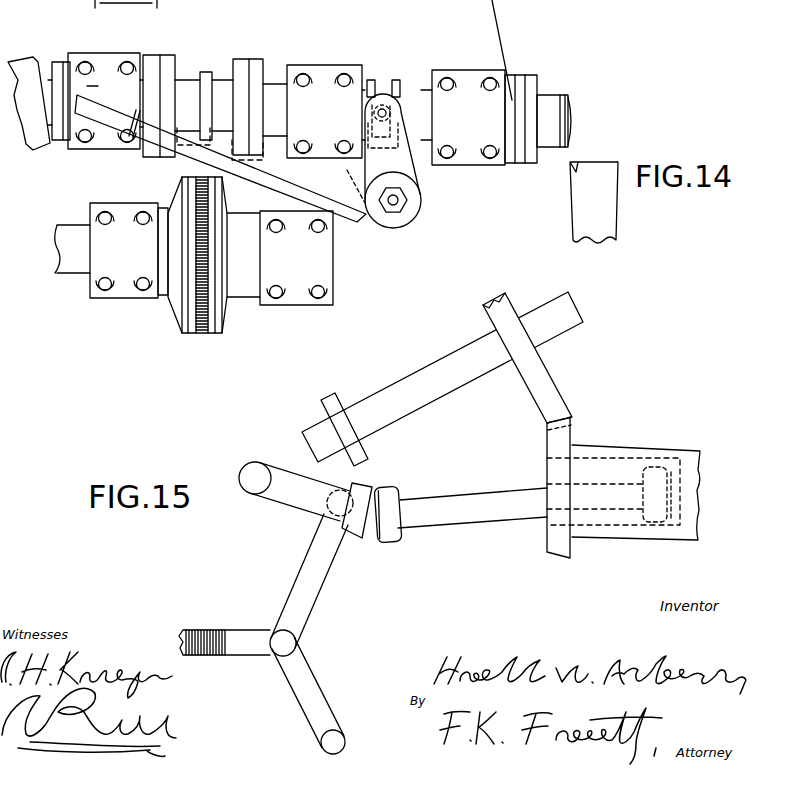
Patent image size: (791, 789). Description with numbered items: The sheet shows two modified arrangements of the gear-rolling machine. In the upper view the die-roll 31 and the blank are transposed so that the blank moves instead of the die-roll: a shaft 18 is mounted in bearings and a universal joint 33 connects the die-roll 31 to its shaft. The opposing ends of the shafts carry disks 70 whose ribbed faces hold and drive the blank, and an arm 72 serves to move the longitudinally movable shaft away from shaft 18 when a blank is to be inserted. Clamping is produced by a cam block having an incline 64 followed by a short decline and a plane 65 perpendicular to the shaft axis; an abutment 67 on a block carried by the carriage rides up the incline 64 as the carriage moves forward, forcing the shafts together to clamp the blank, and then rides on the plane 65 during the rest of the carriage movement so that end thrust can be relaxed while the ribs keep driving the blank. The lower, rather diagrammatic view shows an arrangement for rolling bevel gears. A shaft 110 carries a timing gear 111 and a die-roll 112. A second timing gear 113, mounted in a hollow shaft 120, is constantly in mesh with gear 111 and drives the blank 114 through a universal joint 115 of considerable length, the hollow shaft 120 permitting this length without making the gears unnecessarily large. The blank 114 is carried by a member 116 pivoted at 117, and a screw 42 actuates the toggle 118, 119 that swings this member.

In FIG. 14, the universal joint 33 is at (21, 62).
In FIG. 14, the disks 70 is at (220, 88).
In FIG. 14, the arm 72 is at (260, 168).
In FIG. 14, the plane 65 is at (571, 112).
In FIG. 14, the incline 64 is at (571, 134).
In FIG. 14, the abutment 67 is at (570, 165).
In FIG. 14, the shaft 18 is at (78, 260).
In FIG. 14, the die-roll 31 is at (198, 332).
In FIG. 15, the shaft 110 is at (418, 380).
In FIG. 15, the timing gear 111 is at (528, 384).
In FIG. 15, the die-roll 112 is at (340, 405).
In FIG. 15, the timing gear 113 is at (562, 545).
In FIG. 15, the blank 114 is at (347, 538).
In FIG. 15, the universal joint 115 is at (500, 512).
In FIG. 15, the member 116 is at (307, 500).
In FIG. 15, the pivot 117 is at (255, 488).
In FIG. 15, the toggle 118 is at (300, 583).
In FIG. 15, the toggle 119 is at (303, 702).
In FIG. 15, the screw 42 is at (213, 630).
In FIG. 15, the hollow shaft 120 is at (628, 450).